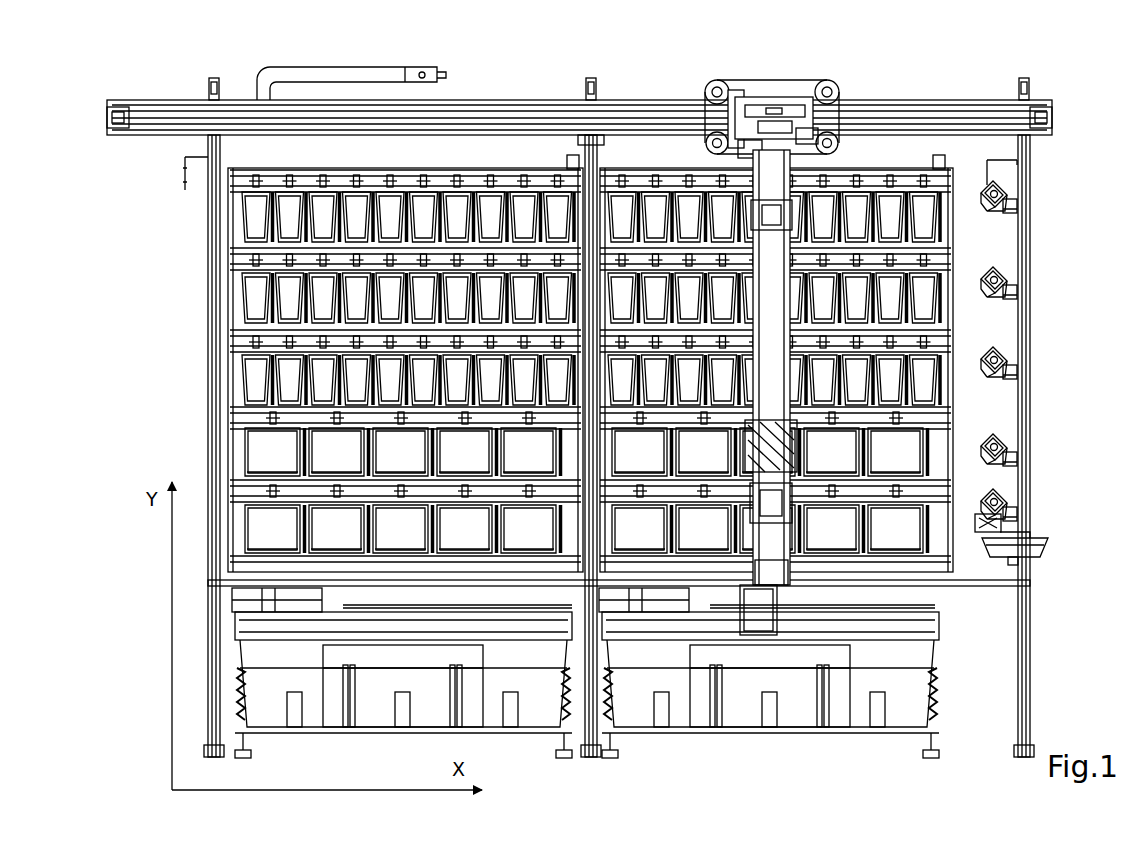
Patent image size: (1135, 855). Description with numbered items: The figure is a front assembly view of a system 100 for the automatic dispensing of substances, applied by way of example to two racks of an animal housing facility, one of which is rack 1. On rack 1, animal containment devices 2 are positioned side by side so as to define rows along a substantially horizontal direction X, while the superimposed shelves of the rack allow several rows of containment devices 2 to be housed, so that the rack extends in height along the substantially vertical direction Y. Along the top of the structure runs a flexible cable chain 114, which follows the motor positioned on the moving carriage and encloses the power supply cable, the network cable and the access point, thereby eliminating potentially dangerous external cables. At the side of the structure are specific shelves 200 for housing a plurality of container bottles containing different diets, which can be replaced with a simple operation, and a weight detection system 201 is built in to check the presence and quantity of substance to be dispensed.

The rack 1 is at (910, 150).
The animal containment devices 2 is at (243, 290).
The system 100 is at (1034, 148).
The flexible cable chain 114 is at (367, 100).
The shelves 200 is at (1006, 426).
The weight detection system 201 is at (1056, 549).